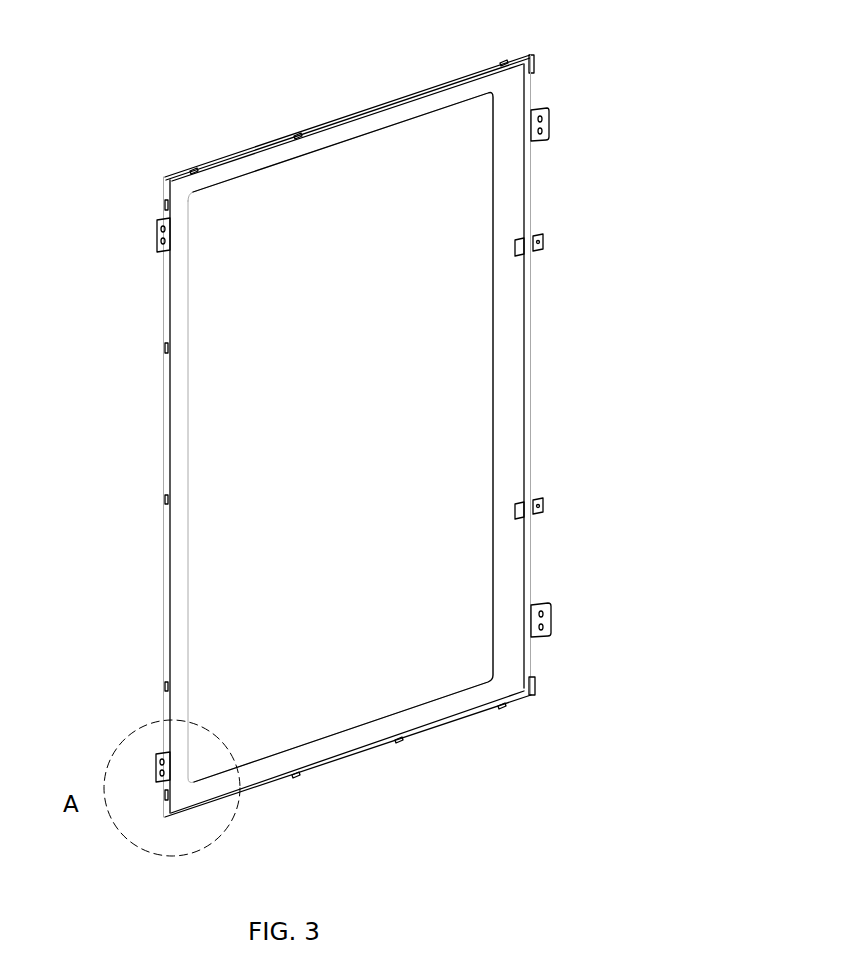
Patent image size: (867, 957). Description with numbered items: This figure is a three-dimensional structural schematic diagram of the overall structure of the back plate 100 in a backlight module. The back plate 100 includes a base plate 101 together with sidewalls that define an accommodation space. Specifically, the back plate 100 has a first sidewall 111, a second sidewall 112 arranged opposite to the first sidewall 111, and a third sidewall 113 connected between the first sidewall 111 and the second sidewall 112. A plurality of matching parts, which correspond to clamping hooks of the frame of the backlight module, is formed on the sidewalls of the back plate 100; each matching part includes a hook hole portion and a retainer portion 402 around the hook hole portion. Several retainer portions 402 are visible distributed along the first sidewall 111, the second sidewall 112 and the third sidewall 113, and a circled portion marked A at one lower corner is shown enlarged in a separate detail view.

The back plate 100 is at (290, 452).
The base plate 101 is at (243, 363).
The first sidewall 111 is at (338, 763).
The second sidewall 112 is at (368, 118).
The third sidewall 113 is at (167, 682).
The retainer portion 402 is at (297, 133).